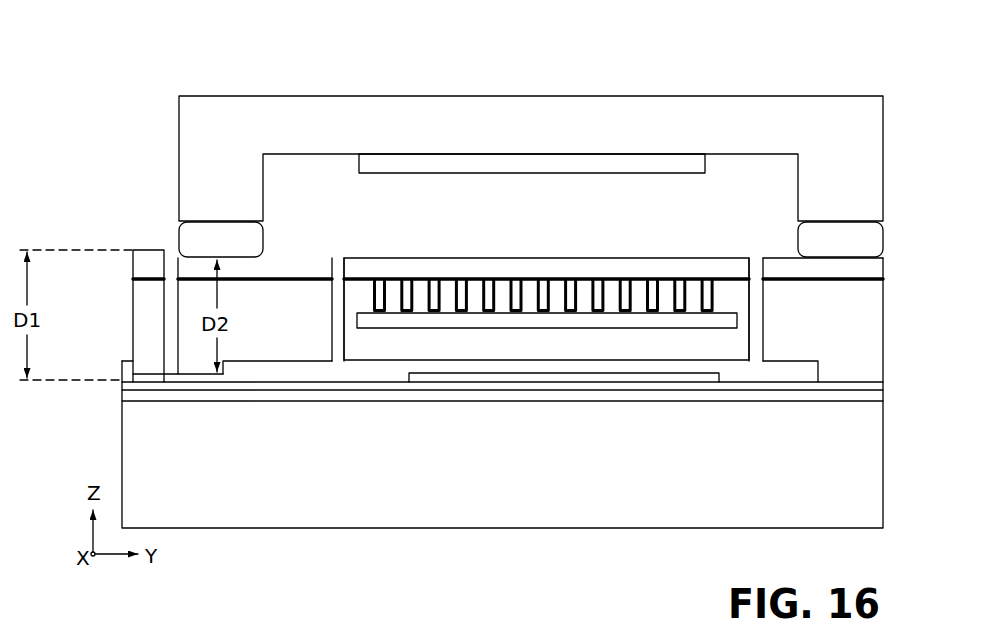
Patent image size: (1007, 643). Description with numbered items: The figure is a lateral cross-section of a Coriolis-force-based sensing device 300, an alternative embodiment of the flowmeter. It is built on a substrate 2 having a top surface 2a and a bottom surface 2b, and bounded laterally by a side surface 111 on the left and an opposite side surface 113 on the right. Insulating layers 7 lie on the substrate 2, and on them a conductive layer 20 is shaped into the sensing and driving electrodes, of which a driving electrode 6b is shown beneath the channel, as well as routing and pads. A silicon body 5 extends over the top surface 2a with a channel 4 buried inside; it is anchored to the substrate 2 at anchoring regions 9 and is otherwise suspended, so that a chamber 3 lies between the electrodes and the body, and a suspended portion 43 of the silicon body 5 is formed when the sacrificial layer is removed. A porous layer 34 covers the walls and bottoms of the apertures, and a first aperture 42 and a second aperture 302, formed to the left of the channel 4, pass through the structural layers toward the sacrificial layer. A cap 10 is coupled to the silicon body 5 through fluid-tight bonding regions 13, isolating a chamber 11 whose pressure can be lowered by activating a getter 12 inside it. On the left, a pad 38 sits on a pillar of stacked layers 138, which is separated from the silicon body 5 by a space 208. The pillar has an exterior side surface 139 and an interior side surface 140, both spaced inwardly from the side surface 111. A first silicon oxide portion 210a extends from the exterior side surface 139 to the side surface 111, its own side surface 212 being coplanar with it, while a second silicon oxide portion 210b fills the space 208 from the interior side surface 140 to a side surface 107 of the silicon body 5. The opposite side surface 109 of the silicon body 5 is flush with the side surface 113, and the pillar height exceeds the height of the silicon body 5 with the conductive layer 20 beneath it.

The Coriolis-force-based sensing device 300 is at (135, 102).
The cap 10 is at (361, 112).
The chamber 11 is at (303, 183).
The getter 12 is at (452, 164).
The coupling or bonding regions 13 is at (168, 246).
The second aperture 302 is at (341, 257).
The first aperture 42 is at (758, 256).
The silicon body 5 is at (534, 256).
The porous layer 34 is at (636, 276).
The channel 4 is at (722, 320).
The suspended portion 43 is at (383, 344).
The pillar of stacked layers 138 is at (145, 295).
The exterior side surface 139 is at (131, 302).
The side surface 107 is at (133, 253).
The pad 38 is at (150, 250).
The space 208 is at (173, 297).
The interior side surface 140 is at (173, 308).
The second silicon oxide portion 210b is at (167, 368).
The first silicon oxide portion 210a is at (118, 377).
The side surface 212 is at (146, 376).
The conductive layer 20 is at (199, 376).
The insulating layers 7 is at (885, 382).
The chamber 3 is at (787, 372).
The anchoring regions 9 is at (201, 360).
The side surface 109 is at (892, 314).
The driving electrode 6b is at (631, 376).
The substrate 2 is at (873, 472).
The top surface 2a is at (275, 397).
The bottom surface 2b is at (318, 531).
The side surface 113 is at (888, 448).
The side surface 111 is at (120, 470).